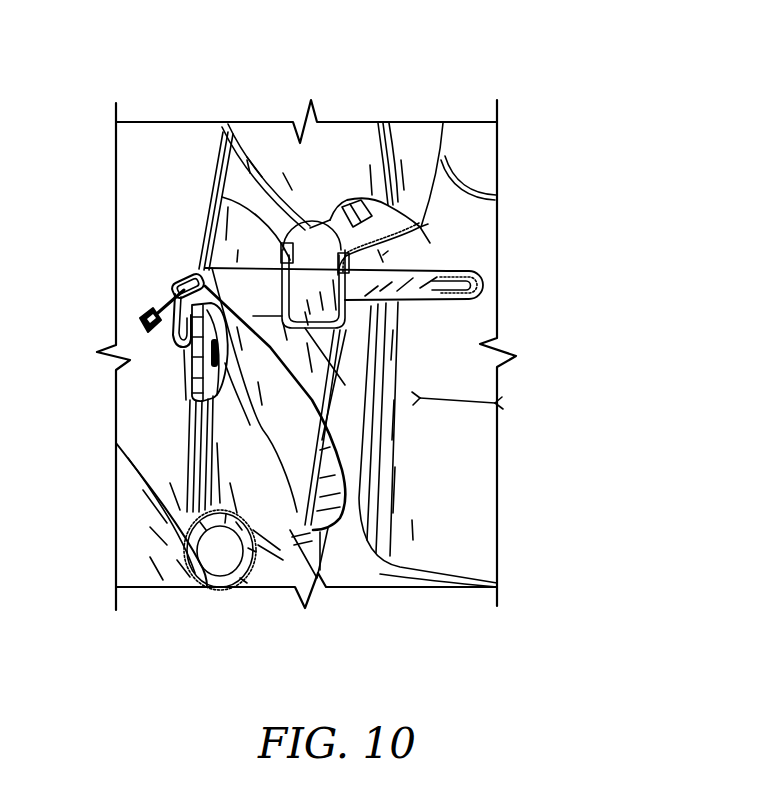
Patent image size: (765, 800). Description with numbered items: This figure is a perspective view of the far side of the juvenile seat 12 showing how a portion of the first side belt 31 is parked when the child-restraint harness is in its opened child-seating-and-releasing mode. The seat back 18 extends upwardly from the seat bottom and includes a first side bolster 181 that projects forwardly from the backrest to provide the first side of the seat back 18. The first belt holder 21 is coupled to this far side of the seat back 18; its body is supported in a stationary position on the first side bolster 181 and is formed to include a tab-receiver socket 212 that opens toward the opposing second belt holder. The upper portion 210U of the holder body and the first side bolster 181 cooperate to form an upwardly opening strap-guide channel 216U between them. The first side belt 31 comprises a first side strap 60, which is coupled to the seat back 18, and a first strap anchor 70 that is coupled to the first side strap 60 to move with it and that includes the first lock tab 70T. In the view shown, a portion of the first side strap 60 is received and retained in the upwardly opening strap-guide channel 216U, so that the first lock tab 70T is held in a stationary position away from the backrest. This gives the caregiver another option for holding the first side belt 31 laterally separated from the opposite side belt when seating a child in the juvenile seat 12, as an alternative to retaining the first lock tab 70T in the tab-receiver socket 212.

The juvenile seat 12 is at (508, 218).
The seat back 18 is at (208, 152).
The upwardly opening strap-guide channel 216U is at (200, 273).
The upper portion of body 210U is at (199, 283).
The first side strap 60 is at (297, 430).
The first strap anchor 70 is at (170, 267).
The first lock tab 70T is at (138, 300).
The first belt holder 21 is at (170, 382).
The tab-receiver socket 212 is at (227, 454).
The first side bolster 181 is at (186, 434).
The first side belt 31 is at (278, 520).